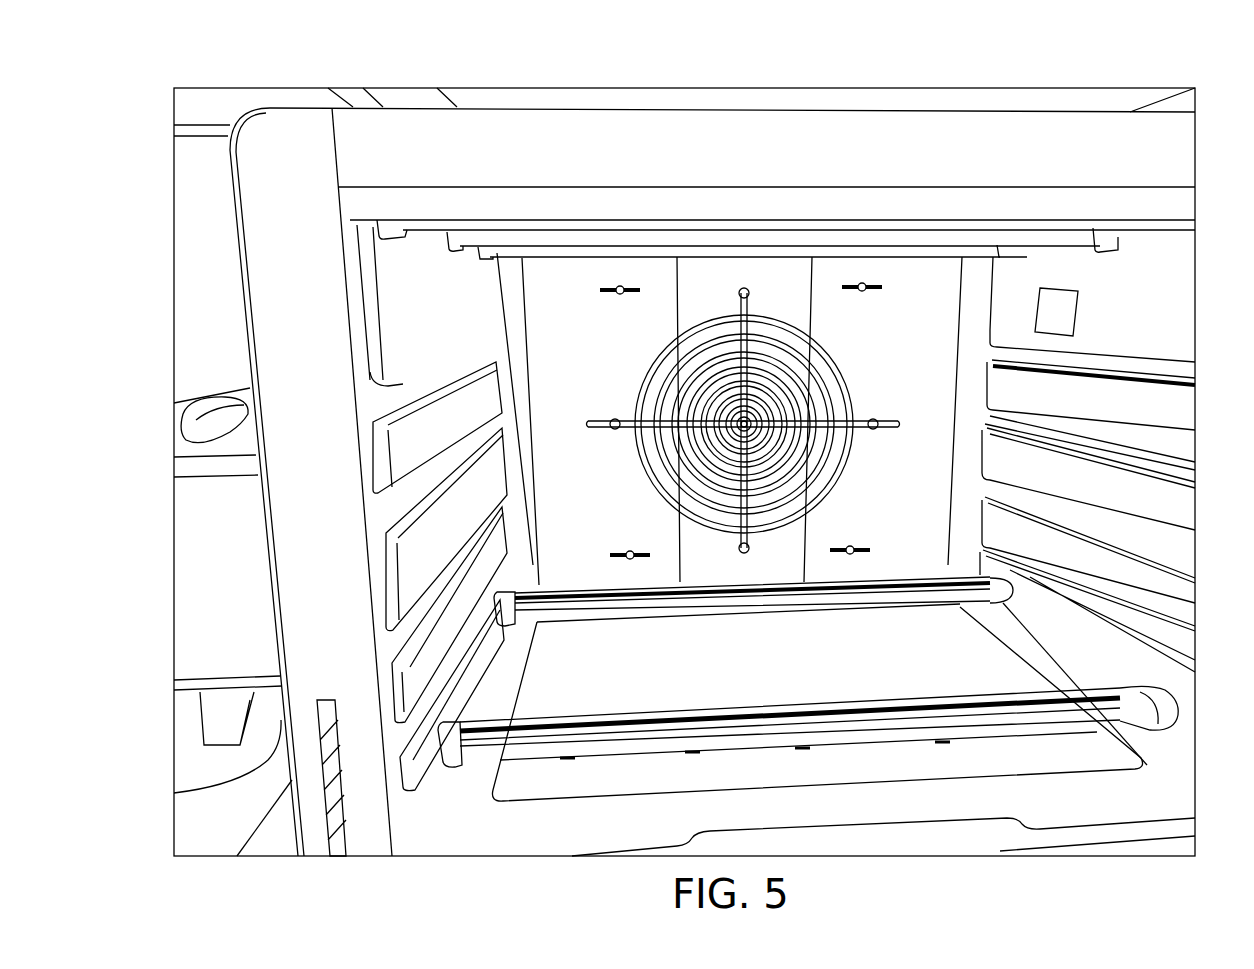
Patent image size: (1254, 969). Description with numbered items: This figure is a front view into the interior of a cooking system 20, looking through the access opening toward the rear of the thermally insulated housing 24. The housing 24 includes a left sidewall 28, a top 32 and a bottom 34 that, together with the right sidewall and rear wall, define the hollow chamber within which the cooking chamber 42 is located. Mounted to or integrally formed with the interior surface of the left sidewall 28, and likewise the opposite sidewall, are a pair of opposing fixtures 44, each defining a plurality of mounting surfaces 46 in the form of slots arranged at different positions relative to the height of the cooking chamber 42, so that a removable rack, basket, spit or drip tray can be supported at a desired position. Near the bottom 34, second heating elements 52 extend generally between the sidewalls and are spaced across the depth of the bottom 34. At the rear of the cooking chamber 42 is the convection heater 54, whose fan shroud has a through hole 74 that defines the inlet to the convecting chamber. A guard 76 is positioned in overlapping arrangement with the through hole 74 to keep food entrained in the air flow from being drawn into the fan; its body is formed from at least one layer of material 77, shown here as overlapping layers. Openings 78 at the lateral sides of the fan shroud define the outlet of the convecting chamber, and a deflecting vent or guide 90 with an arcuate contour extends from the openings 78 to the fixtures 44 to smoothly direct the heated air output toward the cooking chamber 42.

The cooking system 20 is at (122, 92).
The thermally insulated housing 24 is at (216, 163).
The left sidewall 28 is at (272, 602).
The top 32 is at (672, 111).
The bottom 34 is at (1040, 838).
The cooking chamber 42 is at (797, 676).
The fixture 44 is at (346, 308).
The mounting surfaces 46 is at (363, 400).
The second heating element 52 is at (955, 585).
The convection heater 54 is at (743, 414).
The through hole 74 is at (770, 338).
The guard 76 is at (784, 411).
The layer of material 77 is at (780, 368).
The openings 78 is at (1085, 426).
The deflecting vent or guide 90 is at (975, 425).